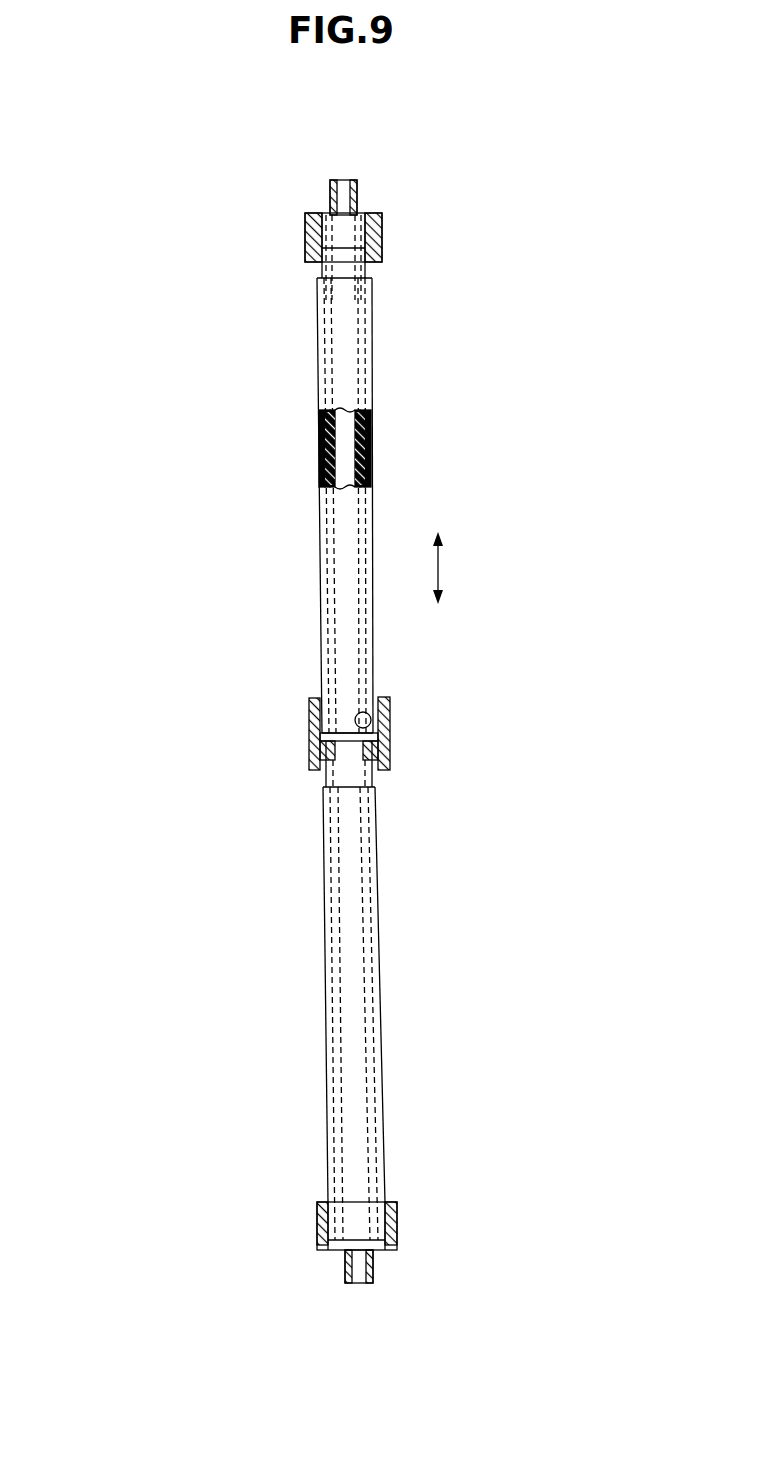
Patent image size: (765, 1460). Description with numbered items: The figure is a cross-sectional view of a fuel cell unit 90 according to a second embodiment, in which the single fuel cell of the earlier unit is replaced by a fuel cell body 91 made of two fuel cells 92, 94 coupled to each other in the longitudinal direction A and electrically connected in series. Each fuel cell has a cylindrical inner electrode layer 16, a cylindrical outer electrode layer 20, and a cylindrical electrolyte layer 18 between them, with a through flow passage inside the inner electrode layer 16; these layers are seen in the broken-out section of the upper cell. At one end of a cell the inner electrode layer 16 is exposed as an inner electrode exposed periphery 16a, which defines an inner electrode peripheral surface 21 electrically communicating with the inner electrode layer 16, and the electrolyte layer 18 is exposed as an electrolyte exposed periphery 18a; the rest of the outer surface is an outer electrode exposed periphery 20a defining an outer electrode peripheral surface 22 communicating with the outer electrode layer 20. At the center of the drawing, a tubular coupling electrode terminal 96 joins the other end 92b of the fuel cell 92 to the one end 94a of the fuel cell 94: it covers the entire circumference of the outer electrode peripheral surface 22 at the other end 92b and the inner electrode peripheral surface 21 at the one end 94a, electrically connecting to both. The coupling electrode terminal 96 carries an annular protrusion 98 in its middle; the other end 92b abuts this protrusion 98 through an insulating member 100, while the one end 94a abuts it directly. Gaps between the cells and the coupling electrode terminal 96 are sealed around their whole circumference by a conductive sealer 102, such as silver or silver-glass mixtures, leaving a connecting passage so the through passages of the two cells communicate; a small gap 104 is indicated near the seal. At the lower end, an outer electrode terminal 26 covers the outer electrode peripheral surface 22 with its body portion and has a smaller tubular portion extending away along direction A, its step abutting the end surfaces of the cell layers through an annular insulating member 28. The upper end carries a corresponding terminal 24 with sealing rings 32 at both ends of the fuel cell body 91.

The fuel cell unit 90 is at (437, 162).
The fuel cell body 91 is at (384, 295).
The fuel cell 92 is at (320, 545).
The other end of the fuel cell 92b is at (302, 688).
The fuel cell 94 is at (325, 883).
The one end of the fuel cell 94a is at (298, 783).
The coupling electrode terminal 96 is at (318, 752).
The annular protrusion 98 is at (318, 713).
The insulating member 100 is at (310, 705).
The conductive sealer 102 is at (376, 700).
The gap 104 is at (378, 718).
The inner electrode layer 16 is at (320, 425).
The inner electrode exposed periphery 16a is at (305, 230).
The electrolyte layer 18 is at (320, 440).
The electrolyte exposed periphery 18a is at (320, 265).
The outer electrode layer 20 is at (320, 470).
The outer electrode exposed periphery 20a is at (318, 345).
The inner electrode peripheral surface 21 is at (343, 245).
The outer electrode peripheral surface 22 is at (344, 308).
The upper connector 24 is at (372, 218).
The outer electrode terminal 26 is at (398, 1240).
The annular insulating member 28 is at (383, 1250).
The seal ring 32 is at (367, 215).
The longitudinal direction A is at (448, 568).